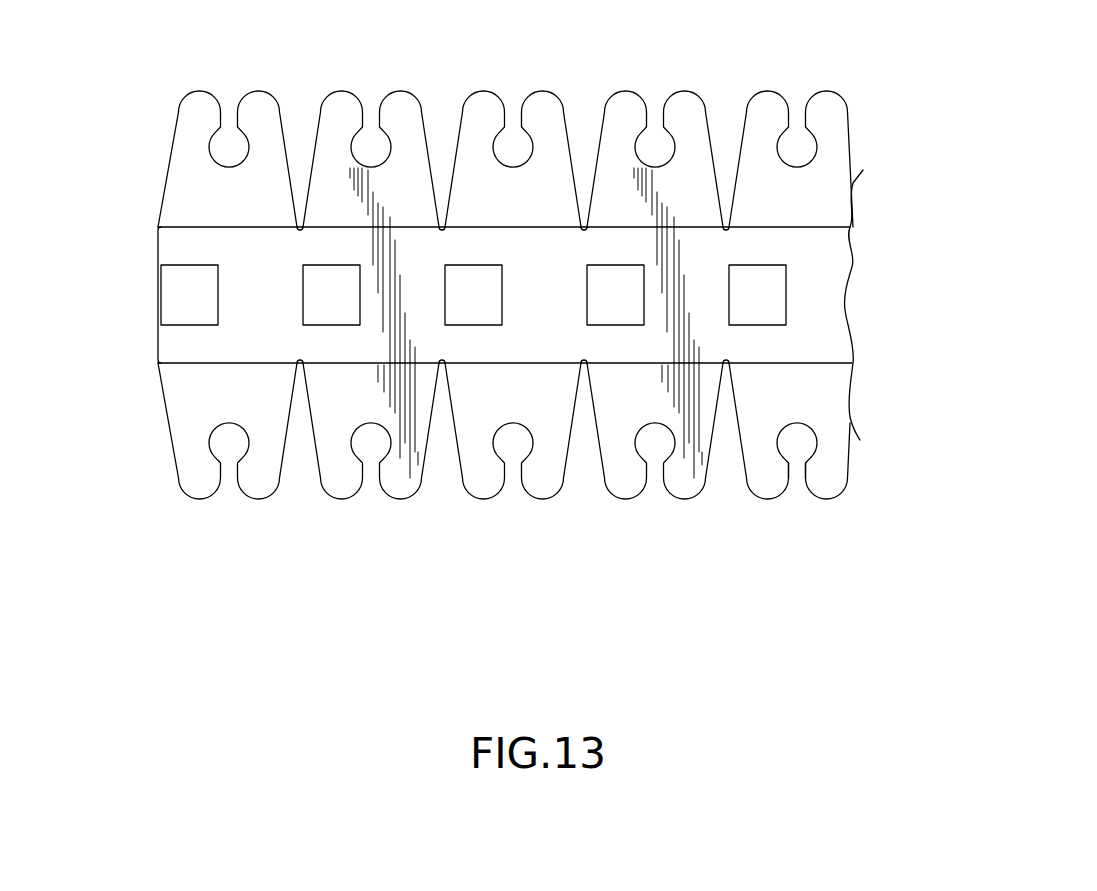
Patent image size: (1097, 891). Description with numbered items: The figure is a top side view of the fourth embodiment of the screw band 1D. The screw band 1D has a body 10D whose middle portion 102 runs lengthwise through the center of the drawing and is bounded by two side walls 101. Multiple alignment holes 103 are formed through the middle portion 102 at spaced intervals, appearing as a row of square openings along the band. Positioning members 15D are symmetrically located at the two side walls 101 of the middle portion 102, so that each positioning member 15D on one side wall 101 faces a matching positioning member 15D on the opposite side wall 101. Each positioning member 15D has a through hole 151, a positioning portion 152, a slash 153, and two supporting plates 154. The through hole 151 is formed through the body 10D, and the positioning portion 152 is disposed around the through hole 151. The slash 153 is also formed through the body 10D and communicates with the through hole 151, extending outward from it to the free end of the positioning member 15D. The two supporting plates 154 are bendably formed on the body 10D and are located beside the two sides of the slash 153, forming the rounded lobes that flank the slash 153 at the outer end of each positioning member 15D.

The screw band 1D is at (143, 238).
The body 10D is at (148, 348).
The positioning members 15D is at (688, 91).
The side walls 101 is at (810, 227).
The middle portion 102 is at (825, 285).
The alignment holes 103 is at (777, 312).
The through hole 151 is at (793, 428).
The positioning portion 152 is at (828, 445).
The slash 153 is at (807, 463).
The supporting plates 154 is at (765, 482).